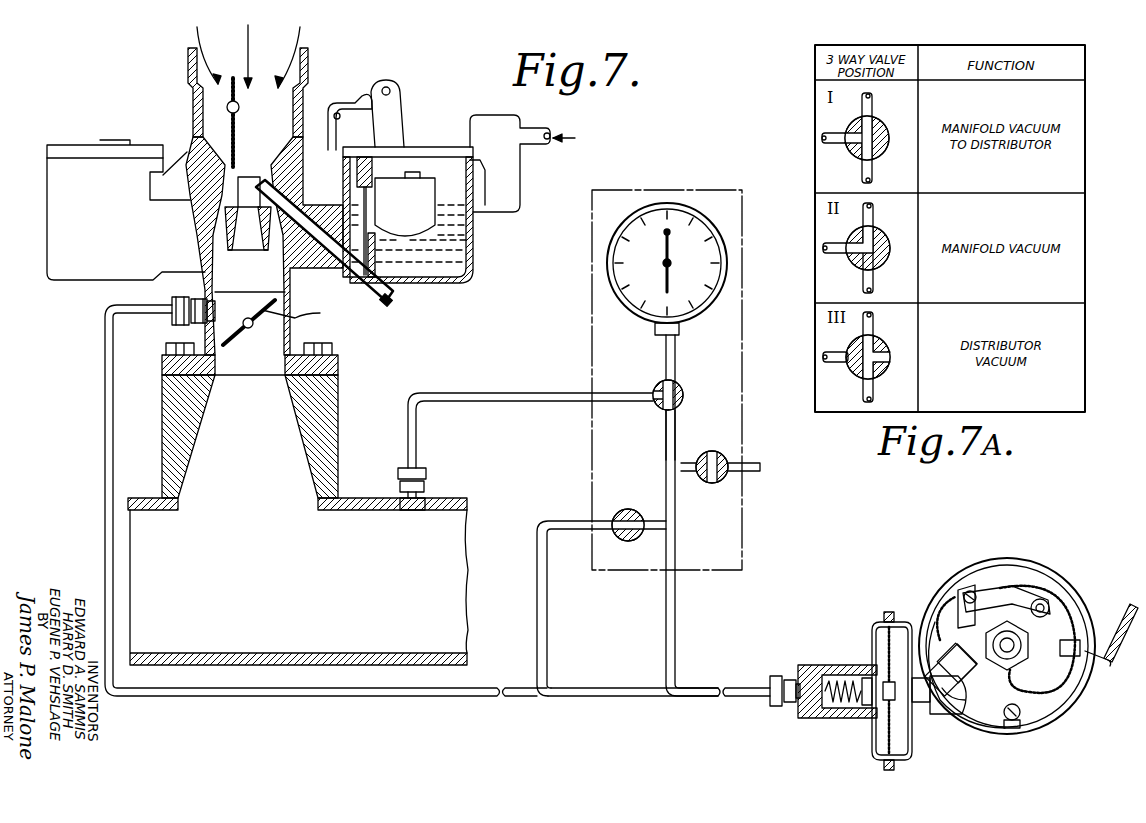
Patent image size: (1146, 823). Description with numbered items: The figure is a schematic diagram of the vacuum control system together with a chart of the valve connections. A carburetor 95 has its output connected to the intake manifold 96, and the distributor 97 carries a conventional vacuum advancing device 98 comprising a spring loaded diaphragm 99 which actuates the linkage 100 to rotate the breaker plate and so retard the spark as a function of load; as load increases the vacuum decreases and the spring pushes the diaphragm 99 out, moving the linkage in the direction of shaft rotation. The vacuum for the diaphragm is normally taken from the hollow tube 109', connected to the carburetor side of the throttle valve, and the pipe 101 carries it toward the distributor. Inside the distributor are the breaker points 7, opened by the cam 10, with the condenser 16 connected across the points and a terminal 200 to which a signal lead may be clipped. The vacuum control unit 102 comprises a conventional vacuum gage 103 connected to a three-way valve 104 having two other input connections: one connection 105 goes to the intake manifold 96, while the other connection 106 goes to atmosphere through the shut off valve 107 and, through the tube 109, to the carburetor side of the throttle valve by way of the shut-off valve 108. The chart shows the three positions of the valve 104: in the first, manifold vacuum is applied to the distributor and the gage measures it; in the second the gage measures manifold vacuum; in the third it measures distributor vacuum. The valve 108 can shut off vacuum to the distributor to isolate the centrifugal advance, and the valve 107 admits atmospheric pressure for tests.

In FIG. 7, the carburetor 95 is at (318, 96).
In FIG. 7, the intake manifold 96 is at (455, 540).
In FIG. 7, the distributor 97 is at (1030, 560).
In FIG. 7, the vacuum advancing device 98 is at (822, 665).
In FIG. 7, the spring loaded diaphragm 99 is at (880, 645).
In FIG. 7, the linkage 100 is at (935, 708).
In FIG. 7, the main vacuum pipe 101 is at (678, 615).
In FIG. 7, the vacuum control unit 102 is at (592, 345).
In FIG. 7, the vacuum gage 103 is at (608, 257).
In FIG. 7, the three-way valve 104 is at (684, 386).
In FIG. 7A, the three-way valve 104 is at (885, 130).
In FIG. 7, the connection to intake manifold 105 is at (492, 393).
In FIG. 7, the connection to shut off valve and tube 106 is at (666, 447).
In FIG. 7, the shut off valve 107 is at (712, 451).
In FIG. 7, the shut-off valve 108 is at (626, 509).
In FIG. 7, the tube 109 is at (575, 608).
In FIG. 7, the hollow tube 109' is at (611, 711).
In FIG. 7, the breaker points 7 is at (930, 600).
In FIG. 7, the cam 10 is at (1018, 708).
In FIG. 7, the condenser 16 is at (982, 700).
In FIG. 7, the terminal 200 is at (1120, 665).